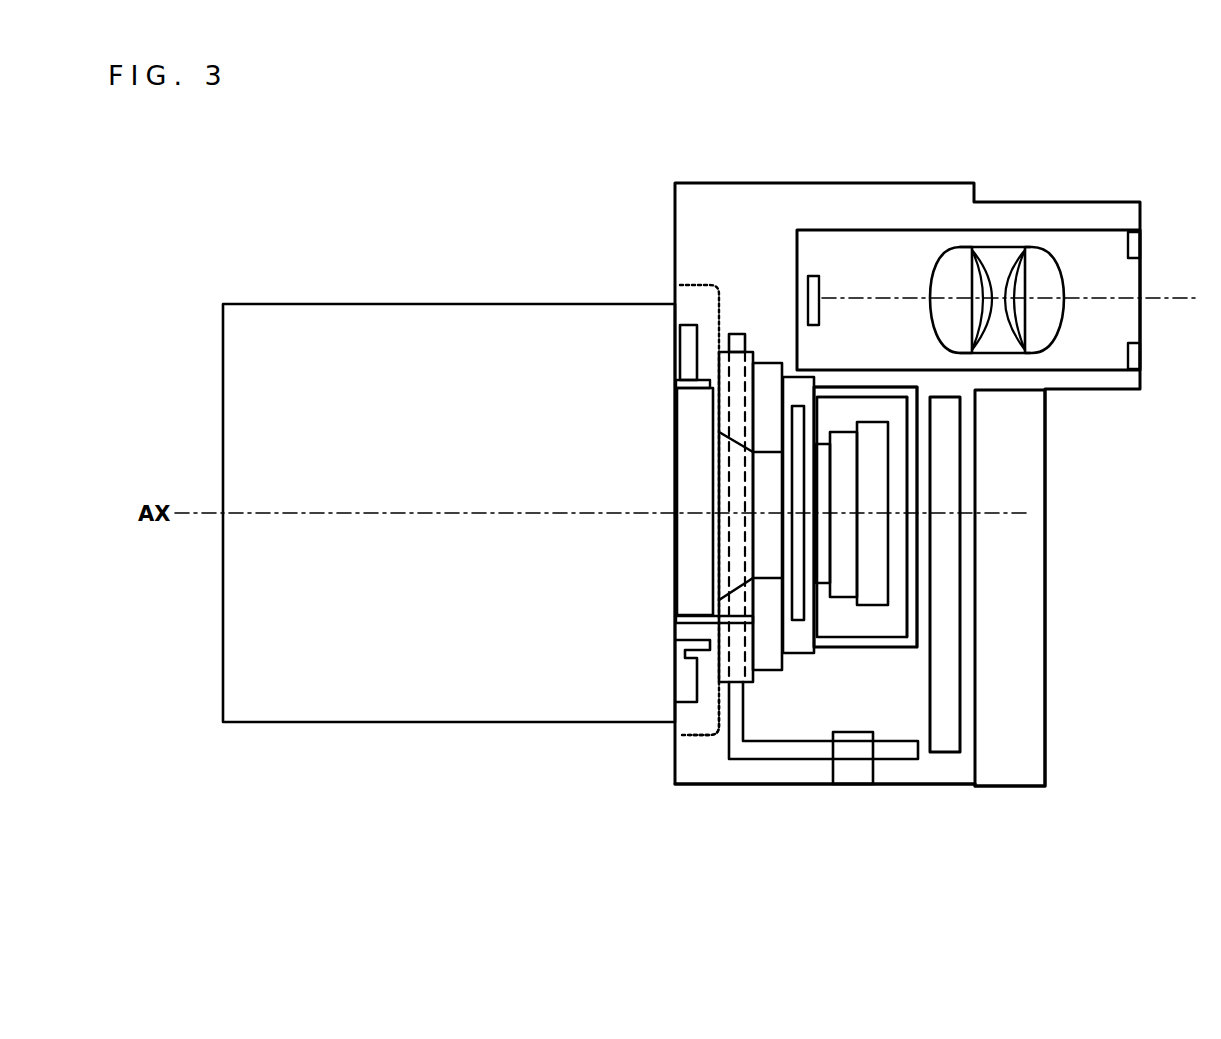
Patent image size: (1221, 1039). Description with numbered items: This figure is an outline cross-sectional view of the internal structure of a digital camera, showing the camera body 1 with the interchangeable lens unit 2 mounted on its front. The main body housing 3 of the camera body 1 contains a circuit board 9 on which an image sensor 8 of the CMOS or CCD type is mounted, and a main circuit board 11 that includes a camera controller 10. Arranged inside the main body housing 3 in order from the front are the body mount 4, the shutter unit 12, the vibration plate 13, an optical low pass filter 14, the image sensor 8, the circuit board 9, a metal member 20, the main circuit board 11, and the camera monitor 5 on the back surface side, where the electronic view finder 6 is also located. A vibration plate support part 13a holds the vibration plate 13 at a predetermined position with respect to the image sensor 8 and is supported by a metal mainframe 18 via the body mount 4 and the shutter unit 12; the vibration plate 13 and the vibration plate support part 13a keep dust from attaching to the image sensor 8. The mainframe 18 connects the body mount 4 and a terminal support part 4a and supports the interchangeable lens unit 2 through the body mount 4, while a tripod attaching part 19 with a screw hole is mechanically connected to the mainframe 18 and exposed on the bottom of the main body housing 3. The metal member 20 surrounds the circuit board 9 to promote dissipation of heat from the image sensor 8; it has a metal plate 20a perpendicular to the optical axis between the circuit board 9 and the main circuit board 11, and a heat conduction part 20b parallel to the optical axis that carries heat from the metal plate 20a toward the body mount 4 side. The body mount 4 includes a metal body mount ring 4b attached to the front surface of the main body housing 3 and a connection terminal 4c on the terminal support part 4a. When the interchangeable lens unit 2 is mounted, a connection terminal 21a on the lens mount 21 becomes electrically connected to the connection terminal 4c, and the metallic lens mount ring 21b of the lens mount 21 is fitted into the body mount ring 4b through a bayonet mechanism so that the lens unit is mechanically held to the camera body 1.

The camera body 1 is at (1018, 192).
The interchangeable lens unit 2 is at (322, 298).
The main body housing 3 is at (792, 786).
The body mount 4 is at (692, 296).
The terminal support part 4a is at (724, 690).
The body mount ring 4b is at (685, 338).
The connection terminal 4c is at (715, 618).
The camera monitor 5 is at (1033, 461).
The electronic view finder 6 is at (1118, 291).
The image sensor 8 is at (848, 539).
The circuit board 9 is at (878, 518).
The camera controller 10 is at (945, 489).
The main circuit board 11 is at (1057, 574).
The shutter unit 12 is at (765, 662).
The vibration plate 13 is at (798, 600).
The vibration plate support part 13a is at (798, 647).
The optical low pass filter 14 is at (822, 561).
The mainframe 18 is at (737, 342).
The tripod attaching part 19 is at (858, 777).
The metal member 20 is at (927, 389).
The metal plate 20a is at (912, 412).
The heat conduction part 20b is at (840, 388).
The lens mount 21 is at (683, 558).
The connection terminal 21a is at (673, 622).
The lens mount ring 21b is at (675, 378).